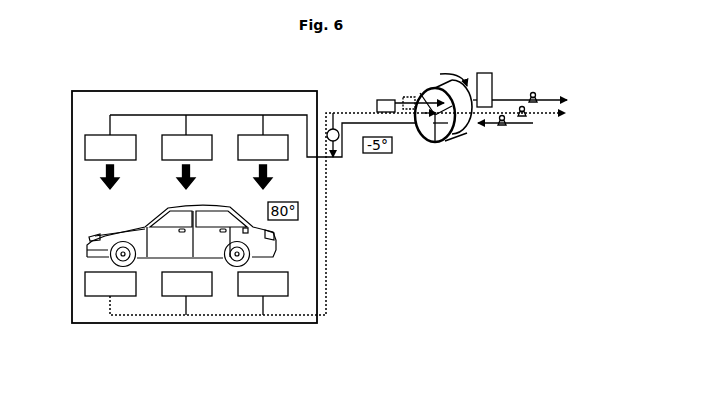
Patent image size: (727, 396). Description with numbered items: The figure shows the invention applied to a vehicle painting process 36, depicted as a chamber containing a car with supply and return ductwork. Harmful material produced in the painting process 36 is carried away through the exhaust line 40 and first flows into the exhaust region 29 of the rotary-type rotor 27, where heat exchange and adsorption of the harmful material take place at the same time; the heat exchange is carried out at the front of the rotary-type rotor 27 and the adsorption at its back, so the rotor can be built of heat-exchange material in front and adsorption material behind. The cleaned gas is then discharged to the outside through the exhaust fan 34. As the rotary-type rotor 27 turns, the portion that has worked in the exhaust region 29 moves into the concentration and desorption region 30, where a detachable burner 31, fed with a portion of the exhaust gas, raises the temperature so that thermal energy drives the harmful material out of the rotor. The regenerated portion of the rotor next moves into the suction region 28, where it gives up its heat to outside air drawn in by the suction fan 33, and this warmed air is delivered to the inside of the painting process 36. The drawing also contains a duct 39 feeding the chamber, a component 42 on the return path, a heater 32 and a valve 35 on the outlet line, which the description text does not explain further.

The rotary-type rotor 27 is at (447, 117).
The suction region 28 is at (445, 132).
The exhaust region 29 is at (427, 138).
The concentration and desorption region 30 is at (430, 88).
The detachable burner 31 is at (385, 100).
The regeneration heater 32 is at (483, 73).
The suction fan 33 is at (502, 127).
The exhaust fan 34 is at (522, 118).
The outlet valve 35 is at (533, 92).
The painting process 36 is at (258, 324).
The supply air duct 39 is at (204, 115).
The exhaust line 40 is at (210, 316).
The blower 42 is at (343, 140).